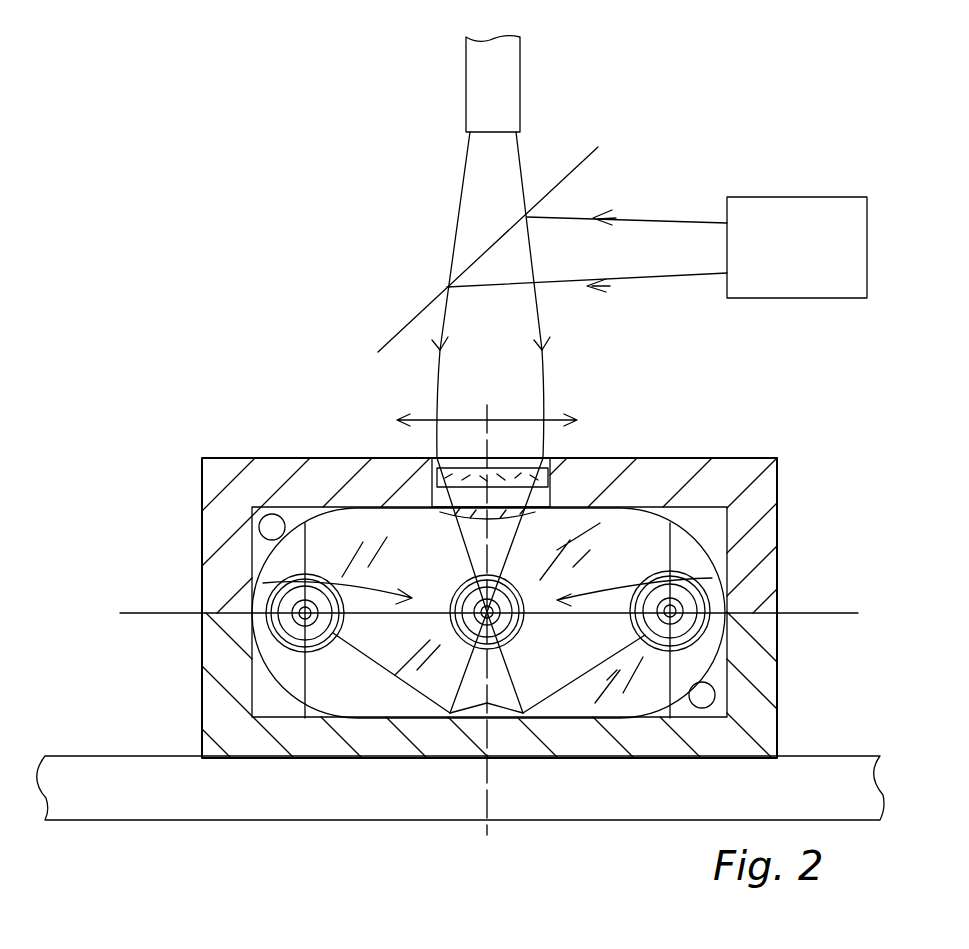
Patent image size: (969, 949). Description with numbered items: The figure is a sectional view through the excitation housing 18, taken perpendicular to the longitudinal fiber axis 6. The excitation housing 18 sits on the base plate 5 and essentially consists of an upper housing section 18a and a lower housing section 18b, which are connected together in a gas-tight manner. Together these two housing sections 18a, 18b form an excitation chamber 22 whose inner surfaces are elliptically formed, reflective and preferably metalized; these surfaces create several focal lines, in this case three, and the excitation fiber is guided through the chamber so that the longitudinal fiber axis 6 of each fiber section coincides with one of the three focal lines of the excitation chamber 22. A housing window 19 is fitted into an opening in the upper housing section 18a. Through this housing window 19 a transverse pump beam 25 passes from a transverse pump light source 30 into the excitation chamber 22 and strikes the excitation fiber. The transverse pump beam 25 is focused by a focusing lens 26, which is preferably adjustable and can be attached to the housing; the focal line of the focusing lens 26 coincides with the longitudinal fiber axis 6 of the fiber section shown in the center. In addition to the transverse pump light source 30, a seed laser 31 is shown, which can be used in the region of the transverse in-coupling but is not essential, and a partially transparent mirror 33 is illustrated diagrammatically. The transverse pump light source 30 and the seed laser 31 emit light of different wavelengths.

The base plate 5 is at (426, 811).
The longitudinal fiber axis 6 is at (312, 650).
The excitation housing 18 is at (481, 562).
The upper housing section 18a is at (219, 482).
The lower housing section 18b is at (222, 712).
The housing window 19 is at (458, 472).
The excitation chamber 22 is at (440, 567).
The transverse pump beam 25 is at (526, 403).
The focusing lens 26 is at (462, 456).
The transverse pump light source 30 is at (480, 76).
The seed laser 31 is at (822, 214).
The partially transparent mirror 33 is at (590, 165).